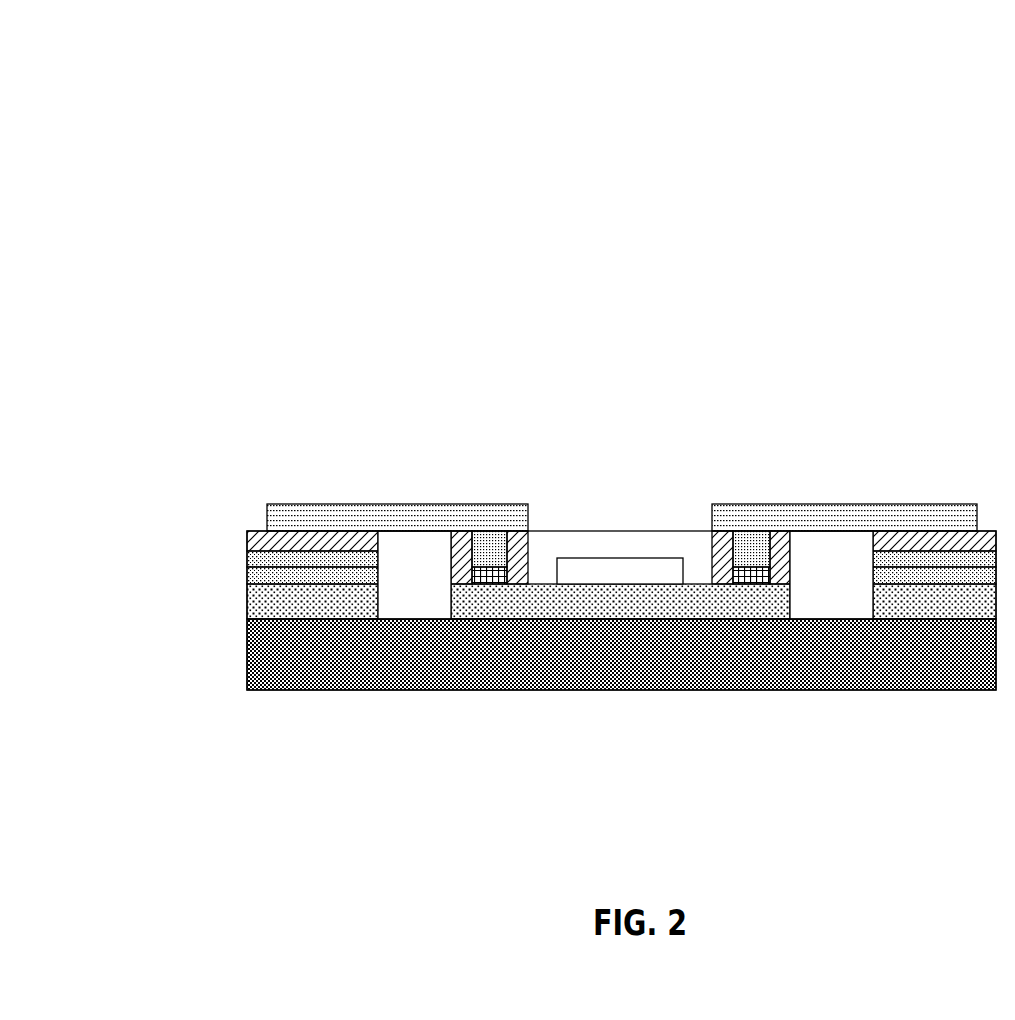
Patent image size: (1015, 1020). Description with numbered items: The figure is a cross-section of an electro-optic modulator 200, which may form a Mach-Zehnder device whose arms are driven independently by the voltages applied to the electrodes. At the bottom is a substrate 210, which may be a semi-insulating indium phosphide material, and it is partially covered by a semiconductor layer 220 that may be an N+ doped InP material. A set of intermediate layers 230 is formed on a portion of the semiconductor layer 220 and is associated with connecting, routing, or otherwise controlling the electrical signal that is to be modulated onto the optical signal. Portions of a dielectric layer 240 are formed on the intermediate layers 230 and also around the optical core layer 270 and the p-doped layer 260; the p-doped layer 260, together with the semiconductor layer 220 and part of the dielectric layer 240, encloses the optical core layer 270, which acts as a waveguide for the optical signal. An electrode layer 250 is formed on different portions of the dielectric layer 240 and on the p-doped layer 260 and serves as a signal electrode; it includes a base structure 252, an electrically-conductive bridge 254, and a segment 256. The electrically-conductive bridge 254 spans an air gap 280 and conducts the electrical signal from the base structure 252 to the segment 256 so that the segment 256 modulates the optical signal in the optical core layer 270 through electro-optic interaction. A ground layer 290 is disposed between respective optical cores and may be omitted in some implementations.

The electro-optic modulator 200 is at (150, 39).
The substrate 210 is at (366, 675).
The semiconductor layer 220 is at (624, 611).
The set of intermediate layers 230 is at (330, 578).
The dielectric layer 240 is at (247, 540).
The electrode layer 250 is at (622, 473).
The base structure 252 is at (318, 525).
The electrically-conductive bridge 254 is at (433, 525).
The segment 256 is at (484, 517).
The p-doped layer 260 is at (501, 548).
The optical core layer 270 is at (505, 575).
The air gap 280 is at (432, 579).
The ground layer 290 is at (638, 580).